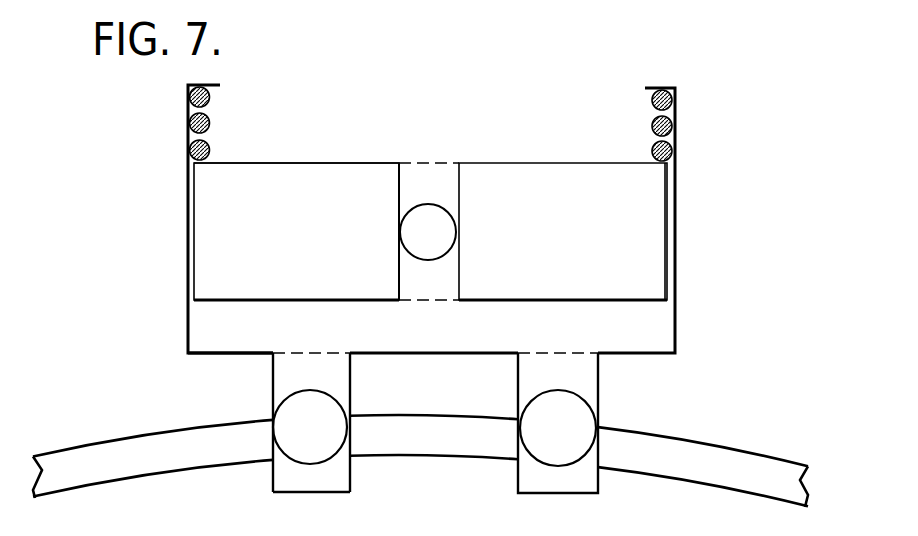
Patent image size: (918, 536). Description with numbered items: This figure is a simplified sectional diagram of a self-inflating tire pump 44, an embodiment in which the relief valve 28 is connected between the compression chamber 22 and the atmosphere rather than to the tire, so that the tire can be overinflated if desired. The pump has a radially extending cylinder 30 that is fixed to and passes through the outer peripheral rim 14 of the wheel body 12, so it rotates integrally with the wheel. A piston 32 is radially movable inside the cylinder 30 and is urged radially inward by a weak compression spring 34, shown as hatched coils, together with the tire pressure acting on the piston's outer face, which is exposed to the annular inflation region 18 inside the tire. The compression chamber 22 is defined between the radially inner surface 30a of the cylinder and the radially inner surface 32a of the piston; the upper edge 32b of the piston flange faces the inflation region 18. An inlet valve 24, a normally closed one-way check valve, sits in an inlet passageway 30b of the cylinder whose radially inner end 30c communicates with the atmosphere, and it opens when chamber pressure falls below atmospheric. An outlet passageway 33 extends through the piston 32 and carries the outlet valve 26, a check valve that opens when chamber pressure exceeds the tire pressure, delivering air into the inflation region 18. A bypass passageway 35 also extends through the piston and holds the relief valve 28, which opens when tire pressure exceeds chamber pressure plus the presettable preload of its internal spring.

The self-inflating tire pump 44 is at (588, 97).
The cylinder 30 is at (677, 326).
The radially inner surface of the cylinder 30a is at (232, 352).
The inlet passageway 30b is at (271, 482).
The radially inner end 30c is at (274, 493).
The piston 32 is at (645, 186).
The radially inner surface of the piston 32a is at (200, 301).
The piston flange top 32b is at (257, 162).
The outlet passageway 33 is at (399, 272).
The compression spring 34 is at (674, 103).
The bypass passageway 35 is at (366, 203).
The inflation region 18 is at (430, 133).
The compression chamber 22 is at (440, 340).
The outlet valve 26 is at (453, 222).
The inlet valve 24 is at (329, 462).
The relief valve 28 is at (580, 415).
The rim 14 is at (732, 468).
The body 12 is at (332, 533).